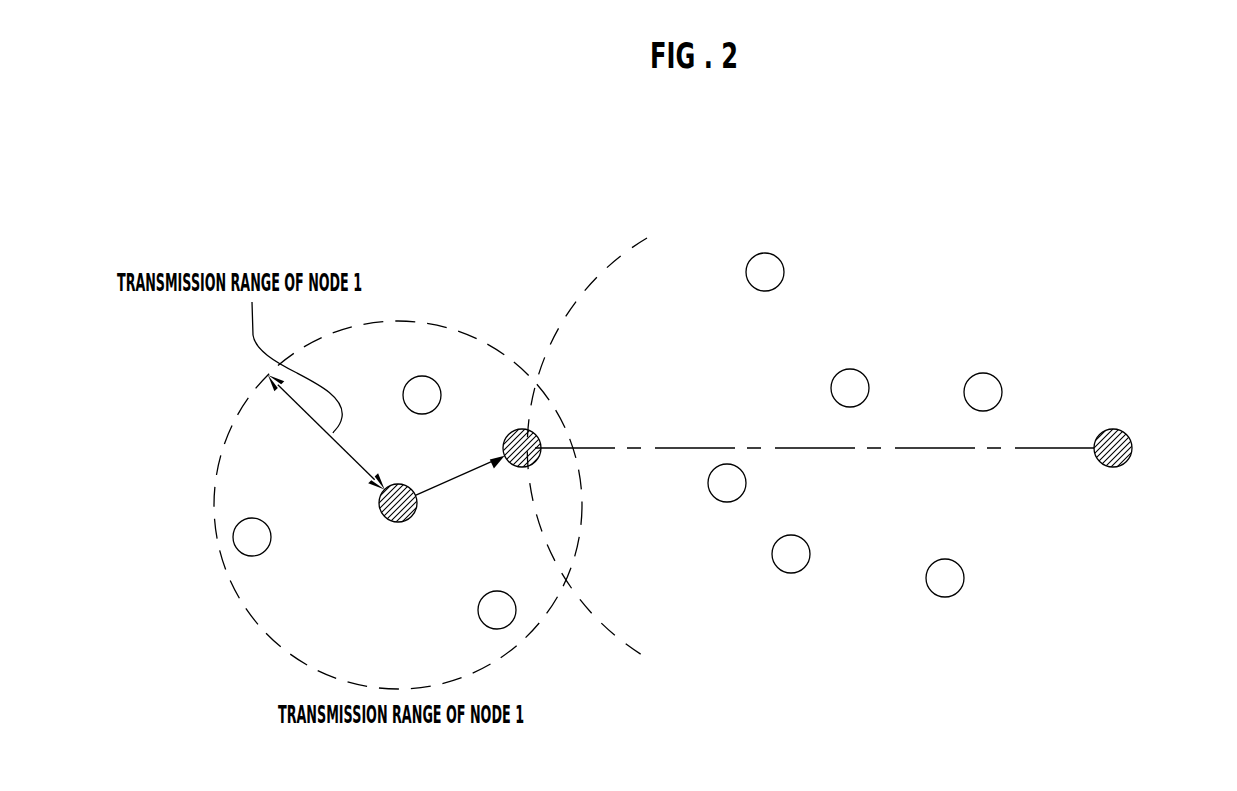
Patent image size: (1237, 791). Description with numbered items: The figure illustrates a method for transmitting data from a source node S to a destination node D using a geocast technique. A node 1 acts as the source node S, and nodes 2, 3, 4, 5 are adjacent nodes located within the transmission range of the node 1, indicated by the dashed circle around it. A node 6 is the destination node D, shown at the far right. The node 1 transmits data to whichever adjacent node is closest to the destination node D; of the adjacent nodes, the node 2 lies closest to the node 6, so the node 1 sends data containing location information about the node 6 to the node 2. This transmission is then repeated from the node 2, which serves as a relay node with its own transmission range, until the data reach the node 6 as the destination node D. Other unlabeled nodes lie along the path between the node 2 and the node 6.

The node 1 is at (397, 522).
The node 2 is at (533, 432).
The node 3 is at (421, 376).
The node 4 is at (254, 556).
The node 5 is at (511, 624).
The node 6 is at (1113, 429).
The source node S is at (383, 512).
The destination node D is at (1132, 447).